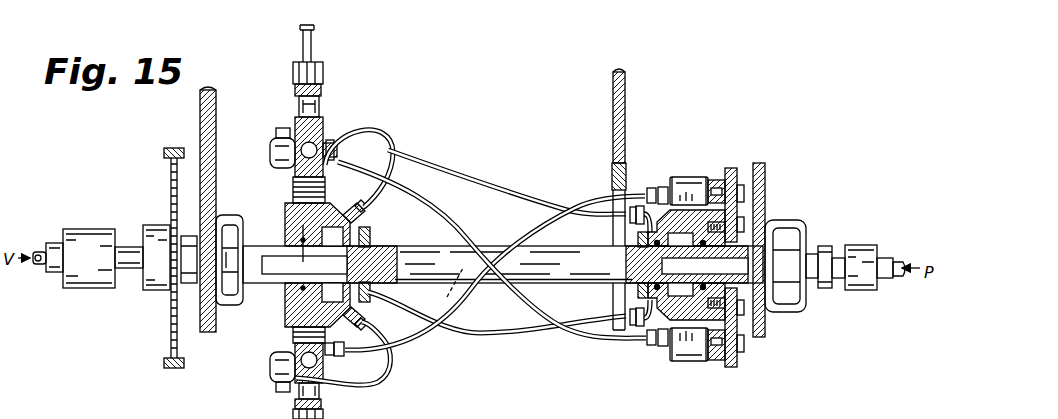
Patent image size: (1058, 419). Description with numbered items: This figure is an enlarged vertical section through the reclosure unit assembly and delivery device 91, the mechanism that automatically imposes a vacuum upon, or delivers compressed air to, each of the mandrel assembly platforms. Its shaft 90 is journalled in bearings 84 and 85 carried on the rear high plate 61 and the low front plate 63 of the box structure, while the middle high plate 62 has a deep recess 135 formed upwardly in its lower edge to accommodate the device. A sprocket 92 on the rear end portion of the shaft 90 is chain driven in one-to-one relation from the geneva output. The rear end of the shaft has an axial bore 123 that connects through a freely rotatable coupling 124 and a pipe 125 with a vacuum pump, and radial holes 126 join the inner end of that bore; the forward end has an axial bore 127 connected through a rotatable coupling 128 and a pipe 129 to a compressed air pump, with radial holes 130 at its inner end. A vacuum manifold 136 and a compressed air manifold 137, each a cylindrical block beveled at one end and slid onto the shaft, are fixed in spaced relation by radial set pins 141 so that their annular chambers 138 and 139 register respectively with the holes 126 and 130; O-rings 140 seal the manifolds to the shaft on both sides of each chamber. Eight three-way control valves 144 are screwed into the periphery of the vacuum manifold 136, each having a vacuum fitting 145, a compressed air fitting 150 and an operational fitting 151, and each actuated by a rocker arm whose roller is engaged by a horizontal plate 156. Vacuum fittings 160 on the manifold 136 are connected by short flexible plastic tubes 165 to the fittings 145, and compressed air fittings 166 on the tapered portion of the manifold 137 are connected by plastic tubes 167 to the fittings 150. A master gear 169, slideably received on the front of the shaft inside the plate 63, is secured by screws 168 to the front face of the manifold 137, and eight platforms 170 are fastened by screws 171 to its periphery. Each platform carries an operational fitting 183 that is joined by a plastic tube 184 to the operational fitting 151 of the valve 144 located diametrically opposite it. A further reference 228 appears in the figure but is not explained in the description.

The rear high plate 61 is at (214, 112).
The middle high plate 62 is at (613, 86).
The low front plate 63 is at (766, 175).
The bearing 84 is at (230, 300).
The bearing 85 is at (795, 238).
The shaft 90 is at (528, 272).
The reclosure unit assembly and delivery device 91 is at (477, 82).
The sprocket 92 is at (171, 327).
The axial bore 123 is at (288, 284).
The freely rotatable coupling 124 is at (58, 272).
The pipe 125 is at (42, 264).
The radial holes 126 is at (292, 212).
The axial bore 127 is at (752, 246).
The rotatable coupling 128 is at (860, 232).
The pipe 129 is at (899, 262).
The radial holes 130 is at (700, 320).
The deep recess 135 is at (612, 176).
The vacuum manifold 136 is at (292, 296).
The compressed air manifold 137 is at (698, 208).
The annular chamber 138 is at (290, 333).
The annular chamber 139 is at (693, 340).
The O-rings 140 is at (304, 244).
The radial set pins 141 is at (372, 292).
The three-way control valves 144 is at (318, 148).
The vacuum fitting 145 is at (298, 128).
The compressed air fitting 150 is at (278, 170).
The operational fitting 151 is at (337, 157).
The horizontal plate 156 is at (115, 410).
The vacuum fittings 160 is at (368, 212).
The short flexible plastic tubes 165 is at (374, 134).
The compressed air fittings 166 is at (622, 220).
The plastic tubes 167 is at (480, 177).
The screws 168 is at (752, 312).
The master gear 169 is at (731, 168).
The strip-closure unit assembly platforms 170 is at (684, 177).
The screws 171 is at (744, 185).
The operational fitting 183 is at (654, 187).
The plastic tubes 184 is at (500, 236).
The actuator assembly 228 is at (718, 108).